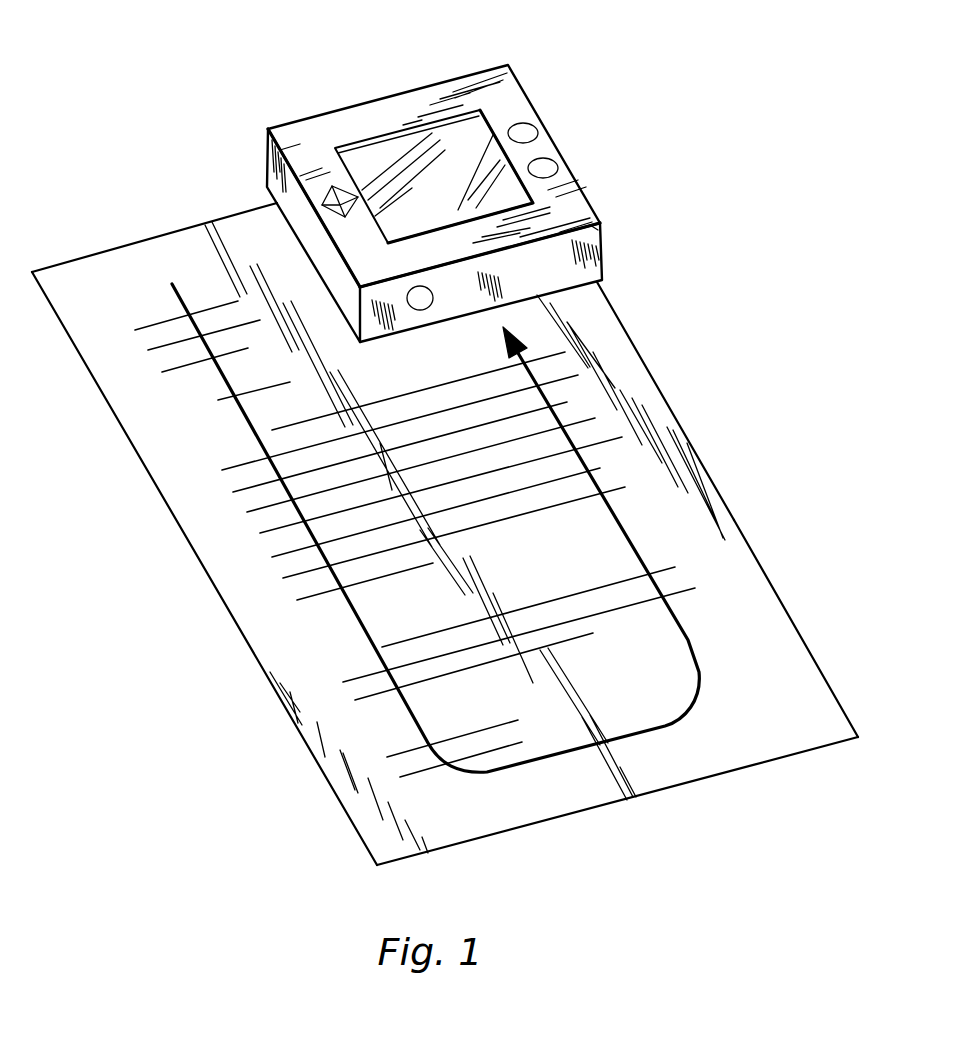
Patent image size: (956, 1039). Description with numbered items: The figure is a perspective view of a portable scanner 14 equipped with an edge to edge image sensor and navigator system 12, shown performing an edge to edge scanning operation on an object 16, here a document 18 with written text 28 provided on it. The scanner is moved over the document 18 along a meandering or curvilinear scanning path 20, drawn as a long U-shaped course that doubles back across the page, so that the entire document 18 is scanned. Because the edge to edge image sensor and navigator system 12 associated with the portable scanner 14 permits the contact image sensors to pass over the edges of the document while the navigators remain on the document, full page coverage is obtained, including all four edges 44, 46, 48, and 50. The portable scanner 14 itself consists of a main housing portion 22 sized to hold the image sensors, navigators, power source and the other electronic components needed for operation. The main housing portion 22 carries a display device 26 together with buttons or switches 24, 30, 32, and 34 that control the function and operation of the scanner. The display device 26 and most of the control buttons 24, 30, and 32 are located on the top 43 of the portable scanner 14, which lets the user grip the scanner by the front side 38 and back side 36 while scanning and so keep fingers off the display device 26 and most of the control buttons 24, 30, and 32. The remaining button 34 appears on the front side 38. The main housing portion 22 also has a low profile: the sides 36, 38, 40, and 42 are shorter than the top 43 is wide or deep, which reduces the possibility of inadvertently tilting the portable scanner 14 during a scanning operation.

The edge to edge image sensor and navigator system 12 is at (407, 339).
The portable scanner 14 is at (550, 80).
The object 16 is at (648, 334).
The document 18 is at (737, 522).
The scanning path 20 is at (686, 638).
The main housing portion 22 is at (570, 185).
The control button 24 is at (341, 213).
The display device 26 is at (372, 150).
The written text 28 is at (505, 520).
The control button 30 is at (537, 130).
The control button 32 is at (552, 165).
The button or switch 34 is at (423, 302).
The back side 36 is at (488, 67).
The front side 38 is at (561, 270).
The side 40 is at (270, 168).
The side 42 is at (600, 218).
The top 43 is at (356, 120).
The edge 44 is at (207, 223).
The edge 46 is at (117, 418).
The edge 48 is at (838, 694).
The edge 50 is at (605, 810).